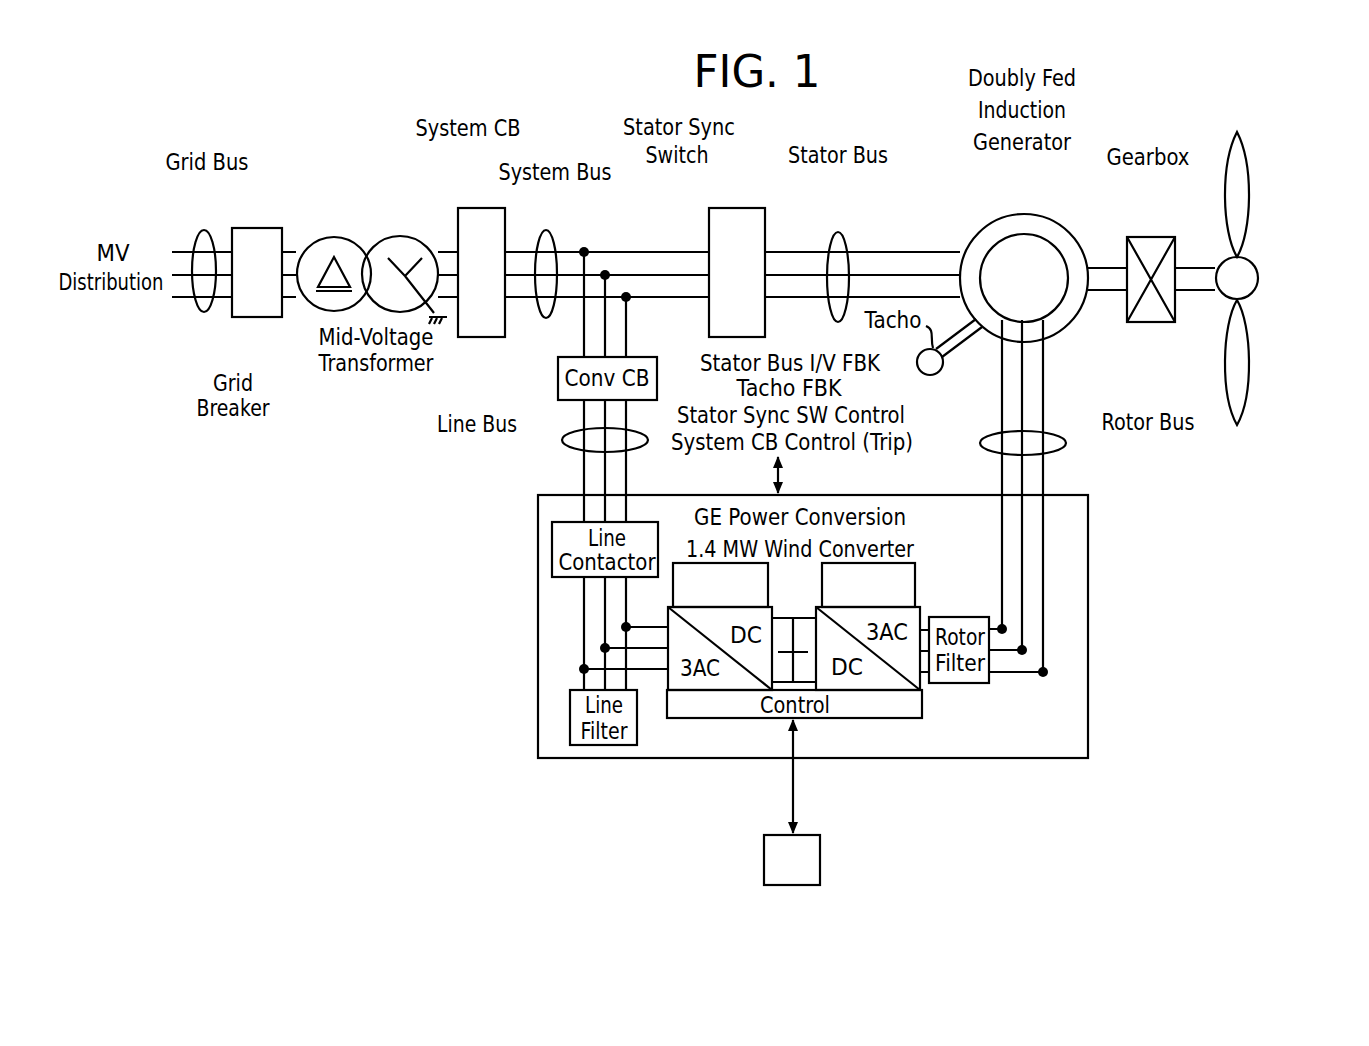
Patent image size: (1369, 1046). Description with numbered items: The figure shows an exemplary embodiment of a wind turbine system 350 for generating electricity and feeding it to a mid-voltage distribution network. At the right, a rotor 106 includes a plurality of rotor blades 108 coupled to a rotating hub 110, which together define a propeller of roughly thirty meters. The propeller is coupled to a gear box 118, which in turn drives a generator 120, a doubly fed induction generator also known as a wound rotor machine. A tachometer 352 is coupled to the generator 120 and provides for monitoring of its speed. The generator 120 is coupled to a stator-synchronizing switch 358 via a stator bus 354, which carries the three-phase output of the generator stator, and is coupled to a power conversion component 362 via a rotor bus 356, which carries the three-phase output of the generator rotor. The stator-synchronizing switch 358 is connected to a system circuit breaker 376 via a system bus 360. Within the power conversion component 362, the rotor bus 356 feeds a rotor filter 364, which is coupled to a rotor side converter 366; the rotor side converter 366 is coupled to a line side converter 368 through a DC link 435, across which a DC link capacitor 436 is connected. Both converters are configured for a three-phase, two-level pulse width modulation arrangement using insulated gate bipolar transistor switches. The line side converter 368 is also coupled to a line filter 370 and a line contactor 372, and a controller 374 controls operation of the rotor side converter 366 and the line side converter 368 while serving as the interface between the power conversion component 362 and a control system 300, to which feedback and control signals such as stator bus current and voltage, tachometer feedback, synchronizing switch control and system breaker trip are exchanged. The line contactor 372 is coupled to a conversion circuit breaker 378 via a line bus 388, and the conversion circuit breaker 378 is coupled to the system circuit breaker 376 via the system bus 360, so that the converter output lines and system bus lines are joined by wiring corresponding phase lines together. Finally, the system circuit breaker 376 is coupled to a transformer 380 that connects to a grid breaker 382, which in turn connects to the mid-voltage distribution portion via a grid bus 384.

The rotor 106 is at (1266, 262).
The rotor blades 108 is at (1252, 196).
The rotating hub 110 is at (1259, 277).
The gear box 118 is at (1152, 237).
The doubly fed induction generator 120 is at (1027, 213).
The control system 300 is at (822, 857).
The wind turbine system 350 is at (411, 658).
The tachometer 352 is at (938, 376).
The stator bus 354 is at (838, 232).
The rotor bus 356 is at (1067, 444).
The stator-synchronizing switch 358 is at (730, 208).
The system bus 360 is at (551, 238).
The power conversion component 362 is at (1088, 668).
The rotor filter 364 is at (978, 686).
The rotor side converter 366 is at (920, 686).
The line side converter 368 is at (666, 684).
The line filter 370 is at (572, 712).
The line contactor 372 is at (552, 538).
The controller 374 is at (730, 720).
The system circuit breaker 376 is at (472, 207).
The conversion circuit breaker 378 is at (558, 377).
The transformer 380 is at (362, 232).
The grid breaker 382 is at (257, 318).
The grid bus 384 is at (202, 228).
The line bus 388 is at (563, 440).
The DC link 435 is at (798, 617).
The DC link capacitor 436 is at (824, 678).